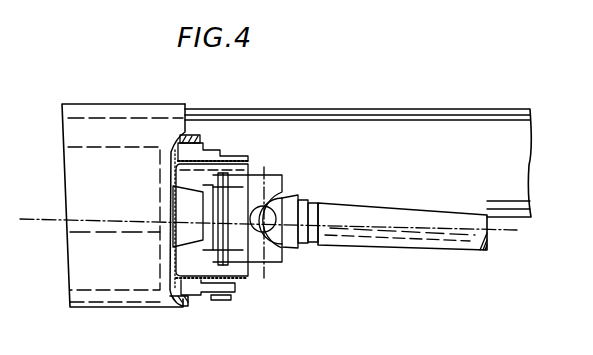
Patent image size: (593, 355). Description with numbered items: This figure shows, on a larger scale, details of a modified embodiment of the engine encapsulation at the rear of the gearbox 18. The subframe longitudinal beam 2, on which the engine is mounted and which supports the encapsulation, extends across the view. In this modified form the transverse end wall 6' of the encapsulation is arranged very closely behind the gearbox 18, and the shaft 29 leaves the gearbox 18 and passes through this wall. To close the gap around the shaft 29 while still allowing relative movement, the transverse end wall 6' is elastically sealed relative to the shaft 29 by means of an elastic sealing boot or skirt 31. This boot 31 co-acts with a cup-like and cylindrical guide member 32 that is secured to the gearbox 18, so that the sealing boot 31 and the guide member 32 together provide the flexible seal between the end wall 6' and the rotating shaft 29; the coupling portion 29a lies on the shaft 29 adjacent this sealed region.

The gearbox 18 is at (90, 162).
The transverse end wall 6' is at (191, 189).
The cup-like and cylindrical guide member 32 is at (213, 160).
The subframe longitudinal beam 2 is at (487, 135).
The yoke of universal joint 29a is at (296, 180).
The shaft 29 is at (443, 237).
The elastic sealing boot or skirt 31 is at (220, 290).